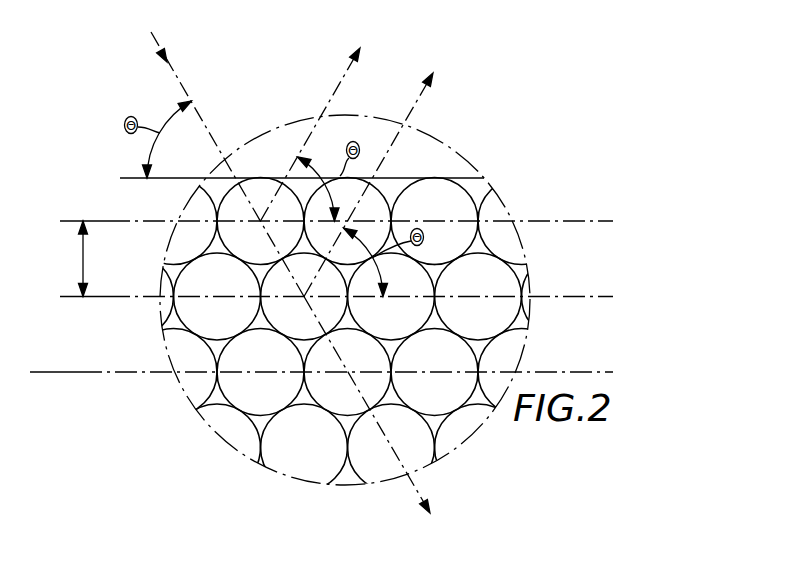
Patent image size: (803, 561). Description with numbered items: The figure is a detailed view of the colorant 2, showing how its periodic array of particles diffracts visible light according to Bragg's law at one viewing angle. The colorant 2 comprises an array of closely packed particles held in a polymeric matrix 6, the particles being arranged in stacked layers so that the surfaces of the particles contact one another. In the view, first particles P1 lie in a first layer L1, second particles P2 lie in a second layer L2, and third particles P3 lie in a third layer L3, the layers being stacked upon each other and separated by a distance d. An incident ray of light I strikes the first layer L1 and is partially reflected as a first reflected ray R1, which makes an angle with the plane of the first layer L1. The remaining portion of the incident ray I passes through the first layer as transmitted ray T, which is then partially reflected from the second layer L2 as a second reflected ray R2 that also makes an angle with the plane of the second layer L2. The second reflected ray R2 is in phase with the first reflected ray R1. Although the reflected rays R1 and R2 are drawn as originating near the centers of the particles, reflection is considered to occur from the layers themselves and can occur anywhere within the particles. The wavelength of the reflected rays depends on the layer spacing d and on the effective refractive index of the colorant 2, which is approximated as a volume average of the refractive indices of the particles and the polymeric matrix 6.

The colorant 2 is at (566, 156).
The polymeric matrix 6 is at (440, 271).
The first particles P1 is at (462, 235).
The second particles P2 is at (546, 318).
The third particles P3 is at (194, 375).
The first layer L1 is at (613, 221).
The second layer L2 is at (613, 296).
The third layer L3 is at (613, 372).
The first reflected ray R1 is at (319, 123).
The second reflected ray R2 is at (376, 174).
The incident ray of light I is at (220, 156).
The transmitted ray T is at (374, 422).
The distance between layers d is at (83, 262).